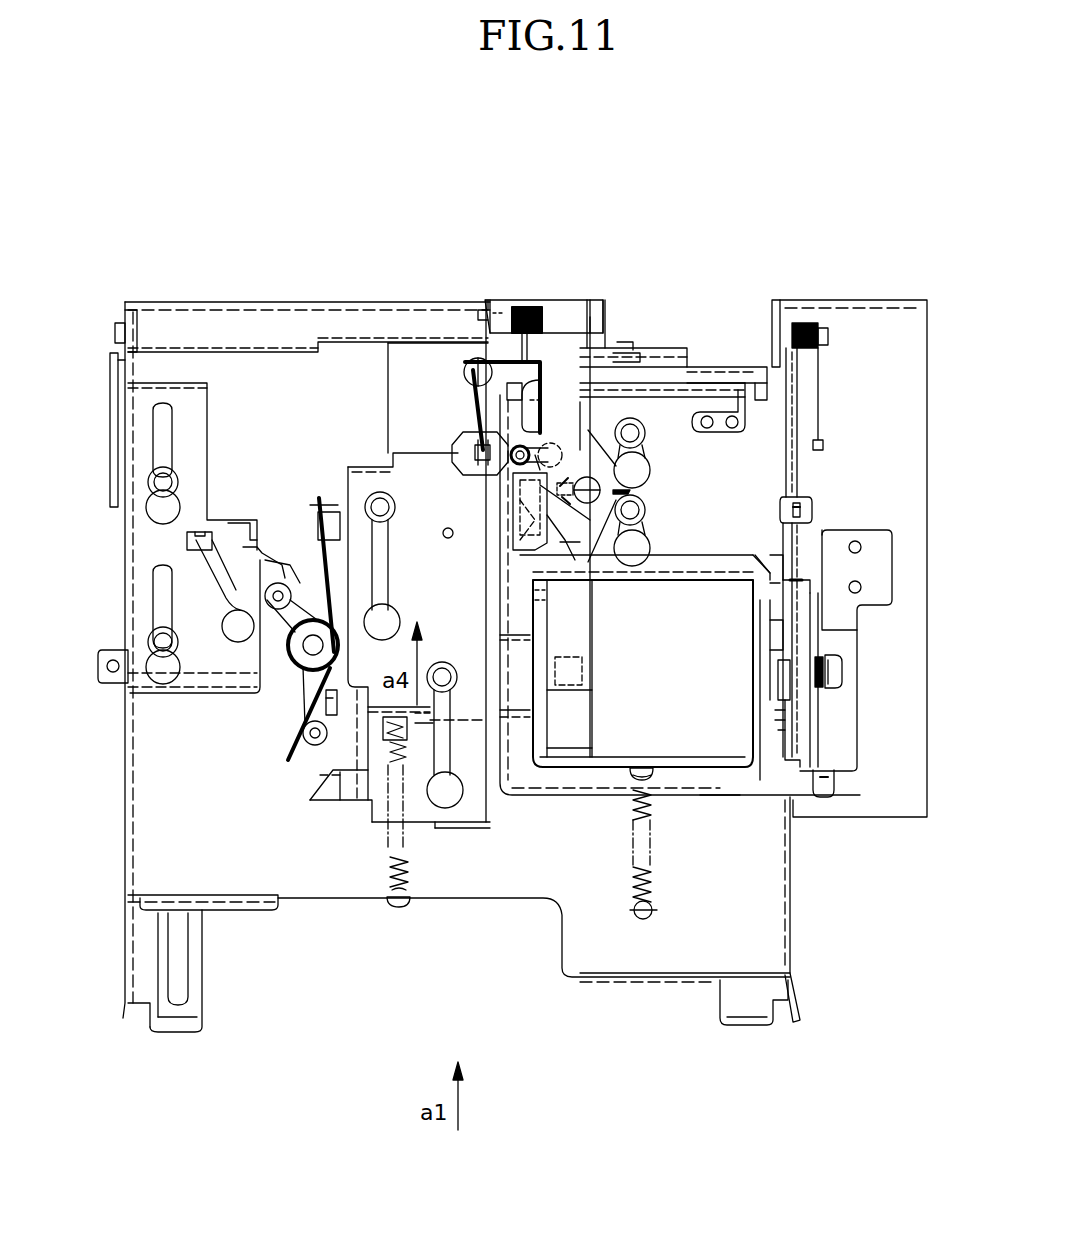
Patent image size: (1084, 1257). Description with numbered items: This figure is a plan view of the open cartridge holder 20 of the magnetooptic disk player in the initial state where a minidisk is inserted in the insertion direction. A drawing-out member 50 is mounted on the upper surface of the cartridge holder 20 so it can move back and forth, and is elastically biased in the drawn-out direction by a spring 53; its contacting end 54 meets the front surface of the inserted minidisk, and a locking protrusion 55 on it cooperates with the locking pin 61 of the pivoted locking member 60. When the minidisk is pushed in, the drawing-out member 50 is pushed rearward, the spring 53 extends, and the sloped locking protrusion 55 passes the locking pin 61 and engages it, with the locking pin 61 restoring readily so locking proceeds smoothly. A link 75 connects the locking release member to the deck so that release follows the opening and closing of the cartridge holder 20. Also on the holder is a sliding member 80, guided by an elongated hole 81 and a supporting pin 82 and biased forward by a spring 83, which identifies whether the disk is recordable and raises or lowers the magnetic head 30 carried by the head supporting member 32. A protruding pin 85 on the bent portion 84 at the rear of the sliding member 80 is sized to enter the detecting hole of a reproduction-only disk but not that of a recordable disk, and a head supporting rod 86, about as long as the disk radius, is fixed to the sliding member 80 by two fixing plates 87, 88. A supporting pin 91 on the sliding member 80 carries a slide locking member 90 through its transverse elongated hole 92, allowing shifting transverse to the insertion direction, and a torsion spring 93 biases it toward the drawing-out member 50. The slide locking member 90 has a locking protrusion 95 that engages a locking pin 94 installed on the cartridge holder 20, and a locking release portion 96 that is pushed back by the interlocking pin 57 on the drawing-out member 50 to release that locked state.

The cartridge holder 20 is at (449, 667).
The magnetic head 30 is at (573, 670).
The head supporting member 32 is at (577, 610).
The drawing-out member 50 is at (450, 835).
The spring 53 is at (387, 870).
The contacting end 54 is at (416, 449).
The locking protrusion 55 is at (342, 802).
The interlocking pin 57 is at (444, 538).
The locking member 60 is at (298, 683).
The locking pin 61 is at (317, 743).
The link 75 is at (108, 432).
The sliding member 80 is at (699, 795).
The elongated hole 81 is at (635, 470).
The supporting pin 82 is at (632, 433).
The spring 83 is at (633, 877).
The bent portion 84 is at (605, 343).
The protruding pin 85 is at (622, 340).
The head supporting rod 86 is at (720, 372).
The fixing plate 87 is at (783, 325).
The fixing plate 88 is at (540, 400).
The slide locking member 90 is at (630, 490).
The supporting pin 91 is at (555, 487).
The transverse elongated hole 92 is at (633, 508).
The torsion spring 93 is at (522, 335).
The locking pin 94 is at (540, 508).
The locking protrusion 95 is at (545, 522).
The locking release portion 96 is at (463, 462).